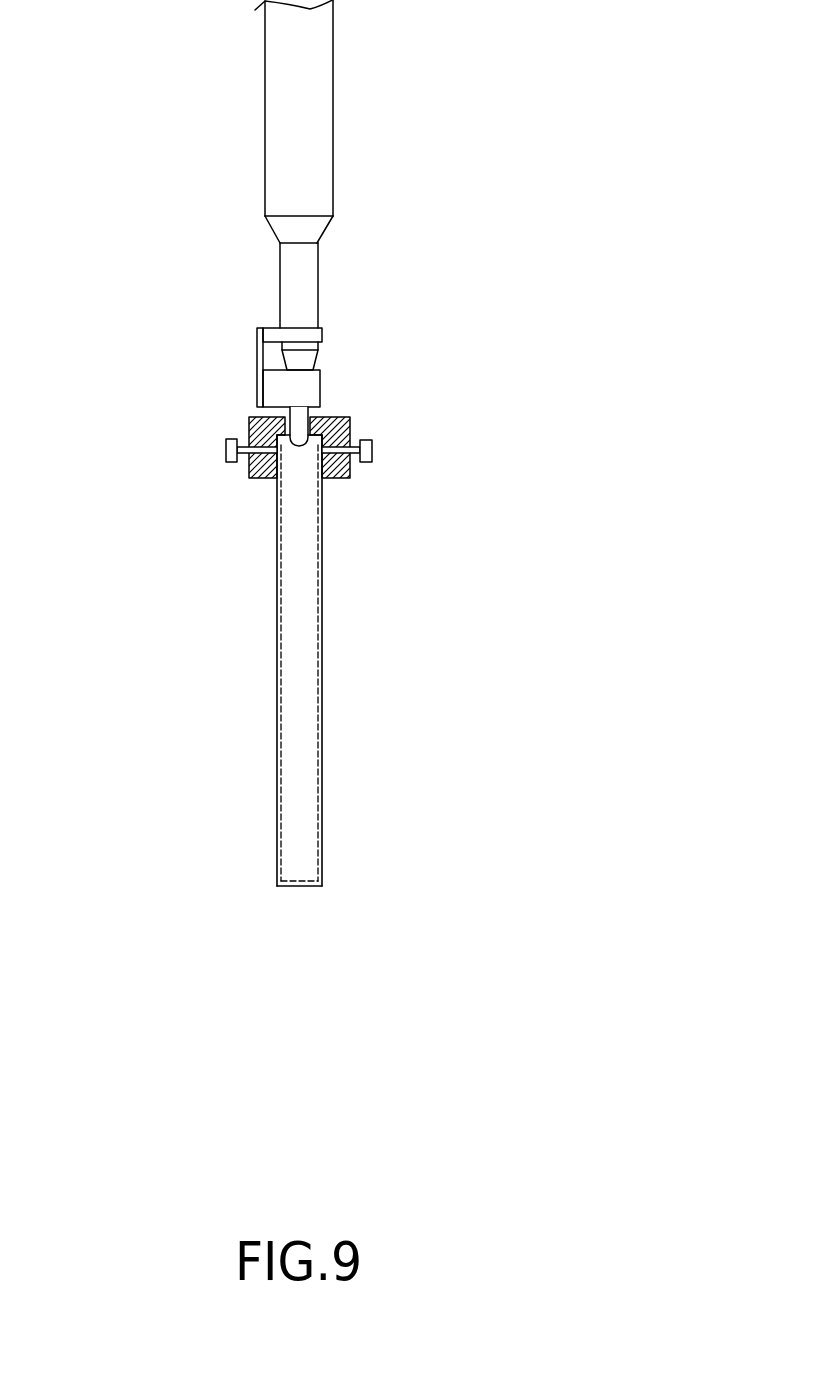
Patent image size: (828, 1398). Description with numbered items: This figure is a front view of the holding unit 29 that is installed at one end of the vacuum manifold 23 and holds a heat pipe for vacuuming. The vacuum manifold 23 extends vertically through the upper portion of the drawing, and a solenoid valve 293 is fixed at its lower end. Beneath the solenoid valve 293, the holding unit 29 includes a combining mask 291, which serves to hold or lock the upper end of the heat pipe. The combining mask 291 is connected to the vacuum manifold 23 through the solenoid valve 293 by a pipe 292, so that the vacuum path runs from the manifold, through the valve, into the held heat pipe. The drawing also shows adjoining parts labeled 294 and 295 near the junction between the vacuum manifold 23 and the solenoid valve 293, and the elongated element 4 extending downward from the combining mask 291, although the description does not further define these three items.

The vacuum manifold 23 is at (313, 120).
The holding unit 29 is at (213, 525).
The combining mask 291 is at (348, 467).
The pipe 292 is at (298, 413).
The solenoid valve 293 is at (297, 390).
The bracket 294 is at (260, 358).
The flange 295 is at (308, 335).
The tube 4 is at (323, 697).